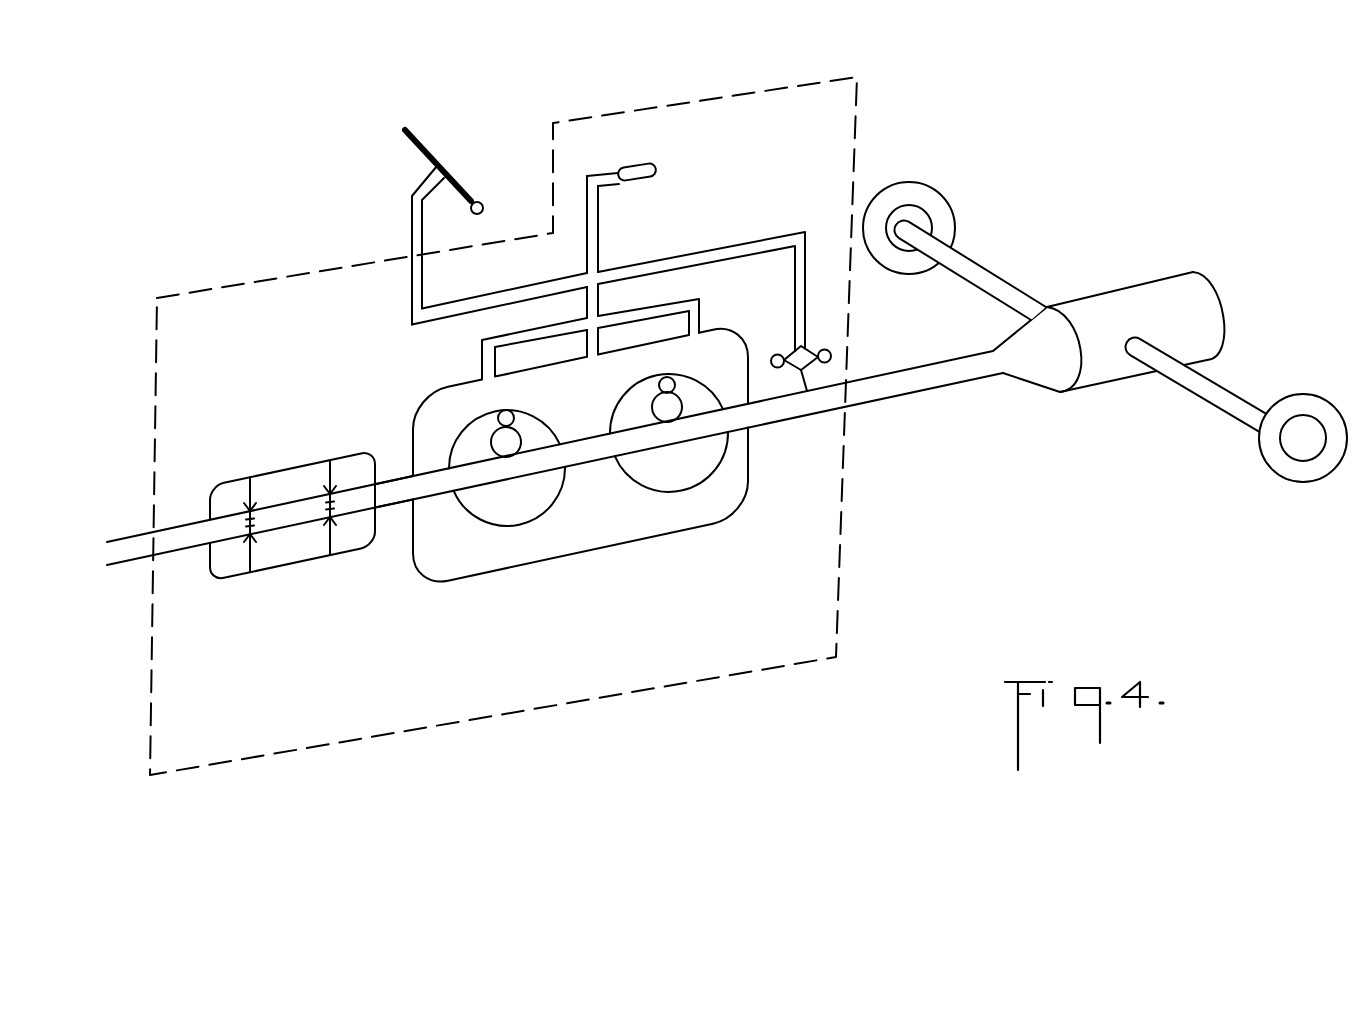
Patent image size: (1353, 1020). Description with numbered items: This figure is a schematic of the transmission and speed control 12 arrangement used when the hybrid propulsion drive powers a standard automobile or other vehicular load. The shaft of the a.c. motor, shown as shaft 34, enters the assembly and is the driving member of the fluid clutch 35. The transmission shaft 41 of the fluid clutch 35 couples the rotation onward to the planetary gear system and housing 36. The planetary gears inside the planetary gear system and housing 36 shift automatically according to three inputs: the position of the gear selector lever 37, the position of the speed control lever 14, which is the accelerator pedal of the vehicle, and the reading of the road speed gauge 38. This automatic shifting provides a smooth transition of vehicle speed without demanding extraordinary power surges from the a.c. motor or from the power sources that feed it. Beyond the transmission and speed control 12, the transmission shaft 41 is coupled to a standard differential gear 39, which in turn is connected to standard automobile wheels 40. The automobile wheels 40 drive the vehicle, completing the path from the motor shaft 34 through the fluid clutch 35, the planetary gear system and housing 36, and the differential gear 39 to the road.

The transmission and speed control 12 is at (838, 572).
The speed control lever 14 is at (462, 187).
The shaft of a.c. motor 34 is at (190, 548).
The fluid clutch 35 is at (262, 570).
The planetary gear system and housing 36 is at (522, 524).
The gear selector lever 37 is at (652, 162).
The road speed gauge 38 is at (795, 353).
The differential gear 39 is at (1123, 288).
The automobile wheels 40 is at (1275, 475).
The transmission shaft 41 is at (395, 503).